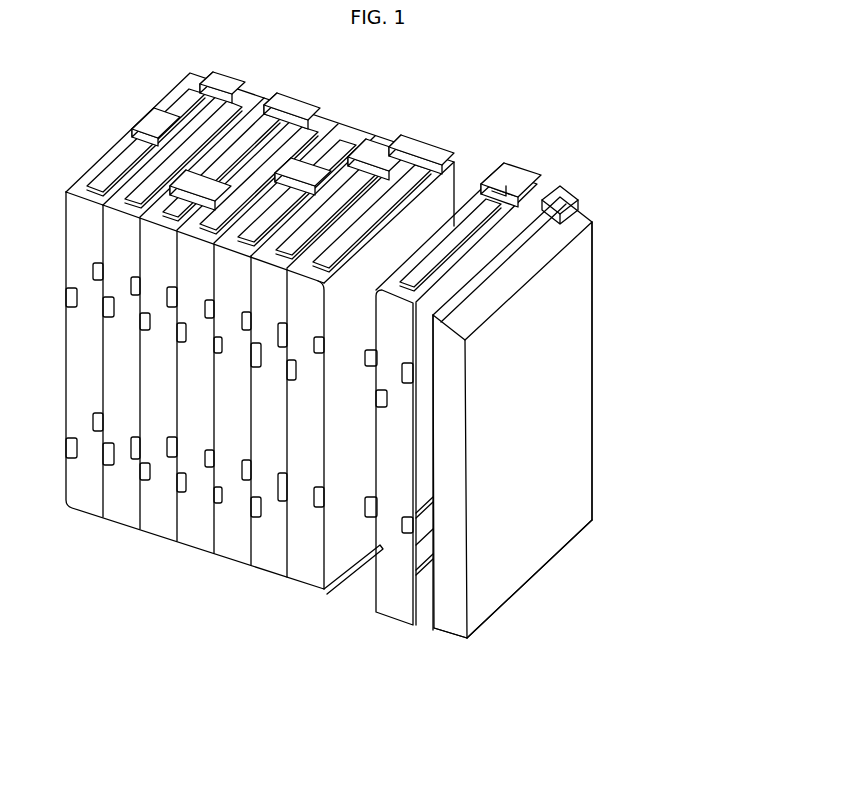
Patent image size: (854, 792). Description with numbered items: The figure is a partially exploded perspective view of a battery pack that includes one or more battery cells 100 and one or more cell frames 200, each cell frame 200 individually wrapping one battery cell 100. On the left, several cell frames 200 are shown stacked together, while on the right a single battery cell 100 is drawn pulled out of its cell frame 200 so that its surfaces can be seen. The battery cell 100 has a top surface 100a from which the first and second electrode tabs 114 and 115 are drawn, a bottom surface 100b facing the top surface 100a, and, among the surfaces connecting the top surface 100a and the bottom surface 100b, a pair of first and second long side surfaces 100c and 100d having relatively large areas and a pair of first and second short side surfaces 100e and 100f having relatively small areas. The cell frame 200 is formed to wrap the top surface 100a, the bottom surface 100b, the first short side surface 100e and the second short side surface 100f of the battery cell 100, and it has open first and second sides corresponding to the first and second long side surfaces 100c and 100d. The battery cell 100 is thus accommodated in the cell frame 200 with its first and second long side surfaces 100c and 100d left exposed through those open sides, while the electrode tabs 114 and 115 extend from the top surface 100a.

The cell frame 200 is at (355, 128).
The battery cell 100 is at (463, 409).
The first electrode tab 114 is at (492, 222).
The second electrode tab 115 is at (544, 190).
The top surface 100a is at (465, 318).
The bottom surface 100b is at (449, 633).
The first long side surface 100c is at (544, 482).
The second long side surface 100d is at (432, 468).
The first short side surface 100e is at (458, 545).
The second short side surface 100f is at (596, 357).